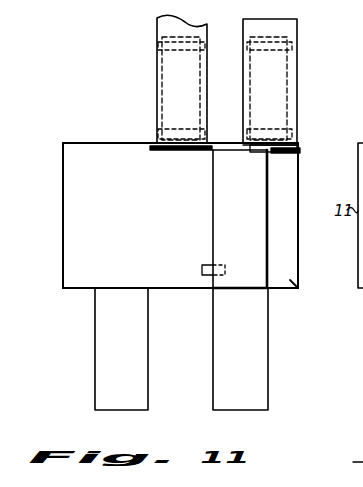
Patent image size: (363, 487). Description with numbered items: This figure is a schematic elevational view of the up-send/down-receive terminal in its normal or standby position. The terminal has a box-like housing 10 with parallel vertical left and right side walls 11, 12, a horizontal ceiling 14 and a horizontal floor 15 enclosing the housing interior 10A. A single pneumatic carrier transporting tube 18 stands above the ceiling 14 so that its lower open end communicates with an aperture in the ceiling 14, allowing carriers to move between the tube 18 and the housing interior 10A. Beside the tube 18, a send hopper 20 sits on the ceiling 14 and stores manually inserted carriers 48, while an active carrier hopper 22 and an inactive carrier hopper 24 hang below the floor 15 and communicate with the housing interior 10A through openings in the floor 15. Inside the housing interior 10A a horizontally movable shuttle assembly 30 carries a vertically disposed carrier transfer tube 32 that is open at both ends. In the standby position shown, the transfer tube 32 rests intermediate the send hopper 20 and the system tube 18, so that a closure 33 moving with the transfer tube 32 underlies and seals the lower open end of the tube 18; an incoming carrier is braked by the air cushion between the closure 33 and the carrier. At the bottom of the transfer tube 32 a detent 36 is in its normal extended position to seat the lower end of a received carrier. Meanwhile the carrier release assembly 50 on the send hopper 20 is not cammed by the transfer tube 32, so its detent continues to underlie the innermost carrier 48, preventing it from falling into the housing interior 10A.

The housing 10 is at (62, 292).
The housing interior 10A is at (288, 274).
The left side wall 11 is at (63, 238).
The right side wall 12 is at (298, 232).
The ceiling 14 is at (104, 142).
The floor 15 is at (182, 290).
The pneumatic carrier transporting tube 18 is at (157, 47).
The send hopper 20 is at (298, 83).
The active carrier hopper 22 is at (257, 376).
The inactive carrier hopper 24 is at (94, 365).
The shuttle assembly 30 is at (212, 188).
The carrier transfer tube 32 is at (225, 212).
The closure 33 is at (148, 149).
The detent 36 is at (202, 270).
The carrier 48 is at (287, 68).
The carrier release assembly 50 is at (308, 149).